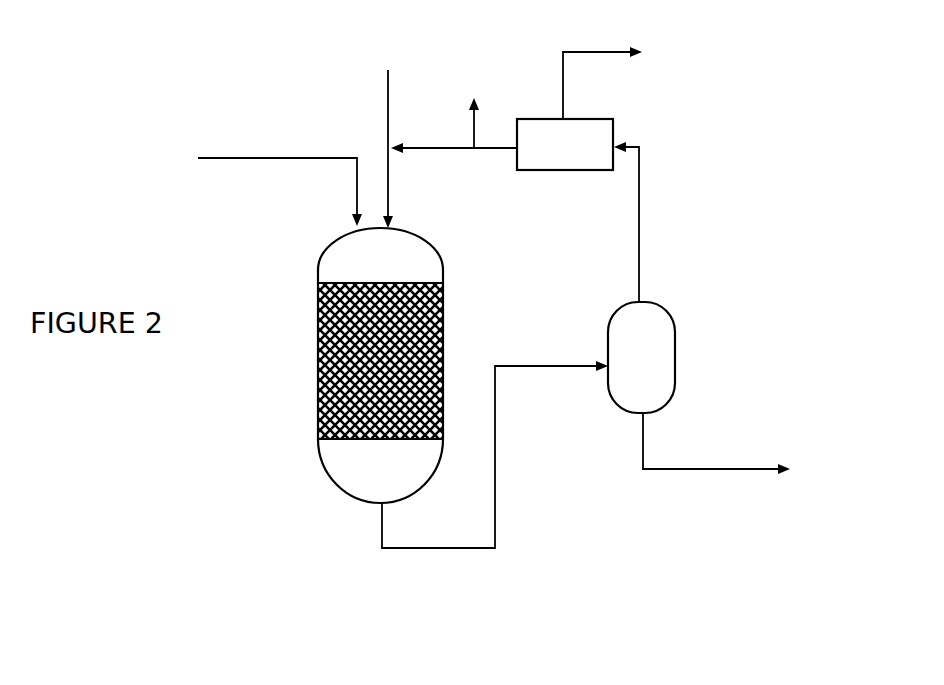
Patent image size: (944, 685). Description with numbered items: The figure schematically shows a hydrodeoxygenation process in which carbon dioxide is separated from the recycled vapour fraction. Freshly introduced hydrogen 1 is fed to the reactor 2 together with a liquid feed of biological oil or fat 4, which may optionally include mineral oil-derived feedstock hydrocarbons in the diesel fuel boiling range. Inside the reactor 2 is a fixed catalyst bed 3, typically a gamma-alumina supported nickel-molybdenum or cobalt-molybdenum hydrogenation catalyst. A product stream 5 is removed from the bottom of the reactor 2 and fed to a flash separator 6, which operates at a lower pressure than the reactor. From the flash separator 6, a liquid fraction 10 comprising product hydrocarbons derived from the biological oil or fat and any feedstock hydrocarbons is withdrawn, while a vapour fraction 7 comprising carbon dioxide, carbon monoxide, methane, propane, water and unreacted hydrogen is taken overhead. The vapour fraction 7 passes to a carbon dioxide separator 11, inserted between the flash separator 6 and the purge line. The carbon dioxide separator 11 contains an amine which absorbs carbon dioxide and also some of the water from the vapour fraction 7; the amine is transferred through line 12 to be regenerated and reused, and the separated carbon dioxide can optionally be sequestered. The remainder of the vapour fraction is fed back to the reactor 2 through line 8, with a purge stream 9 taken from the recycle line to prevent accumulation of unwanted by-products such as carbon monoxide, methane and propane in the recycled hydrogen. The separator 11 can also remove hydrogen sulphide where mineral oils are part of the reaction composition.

The hydrogen 1 is at (384, 129).
The reactor 2 is at (310, 265).
The fixed catalyst bed 3 is at (340, 357).
The liquid feed of biological oil or fat 4 is at (270, 186).
The product stream 5 is at (495, 473).
The flash separator 6 is at (641, 357).
The vapour fraction 7 is at (639, 222).
The recycle line 8 is at (454, 135).
The purge stream 9 is at (474, 105).
The liquid fraction 10 is at (736, 448).
The carbon dioxide separator 11 is at (565, 144).
The line for amine regeneration 12 is at (622, 78).